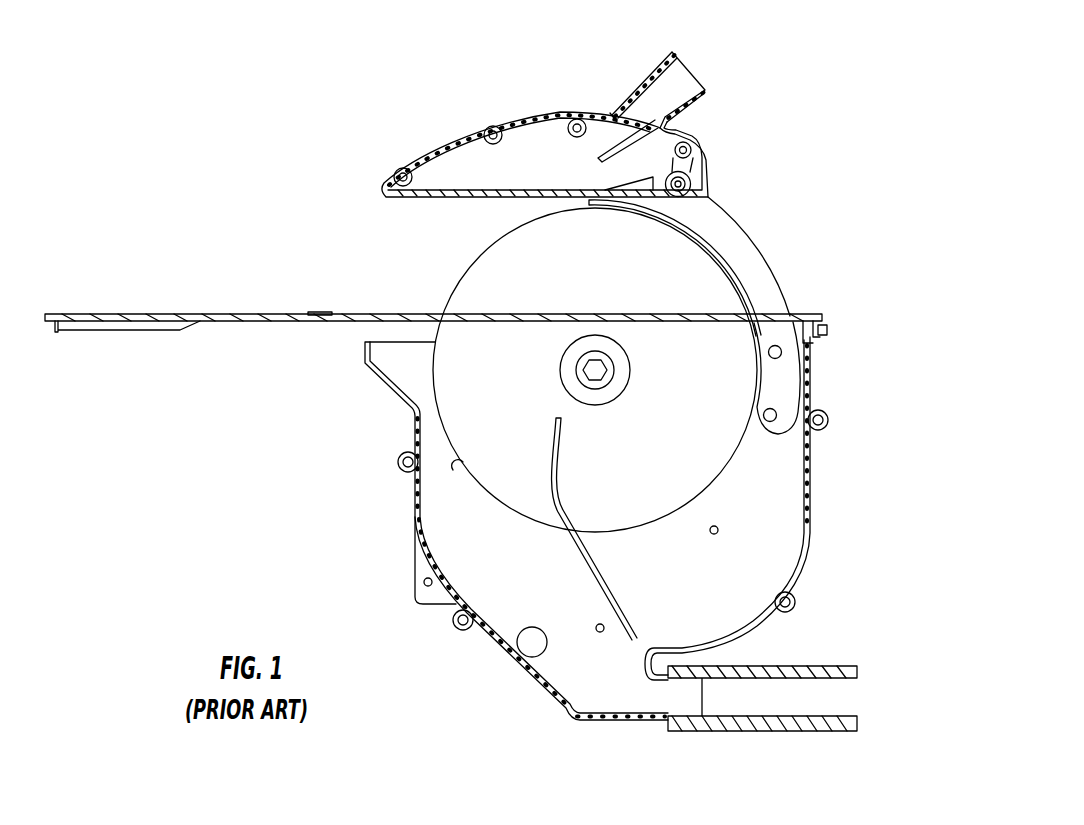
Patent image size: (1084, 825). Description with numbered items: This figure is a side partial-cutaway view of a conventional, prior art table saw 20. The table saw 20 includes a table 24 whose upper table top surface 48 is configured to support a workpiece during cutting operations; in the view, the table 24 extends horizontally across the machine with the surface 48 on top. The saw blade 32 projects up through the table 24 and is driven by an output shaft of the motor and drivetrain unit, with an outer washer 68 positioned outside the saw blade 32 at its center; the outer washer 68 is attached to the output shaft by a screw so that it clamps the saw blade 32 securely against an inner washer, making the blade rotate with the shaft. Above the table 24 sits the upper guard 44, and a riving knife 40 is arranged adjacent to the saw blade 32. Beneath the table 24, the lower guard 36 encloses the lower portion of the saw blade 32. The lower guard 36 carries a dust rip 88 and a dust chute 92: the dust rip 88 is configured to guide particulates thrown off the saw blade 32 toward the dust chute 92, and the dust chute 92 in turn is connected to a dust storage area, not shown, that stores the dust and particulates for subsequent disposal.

The table saw 20 is at (306, 108).
The table 24 is at (212, 318).
The saw blade 32 is at (473, 408).
The lower guard 36 is at (805, 553).
The riving knife 40 is at (717, 225).
The upper guard 44 is at (538, 128).
The upper table top surface 48 is at (316, 304).
The outer washer 68 is at (583, 370).
The dust rip 88 is at (608, 592).
The dust chute 92 is at (745, 695).